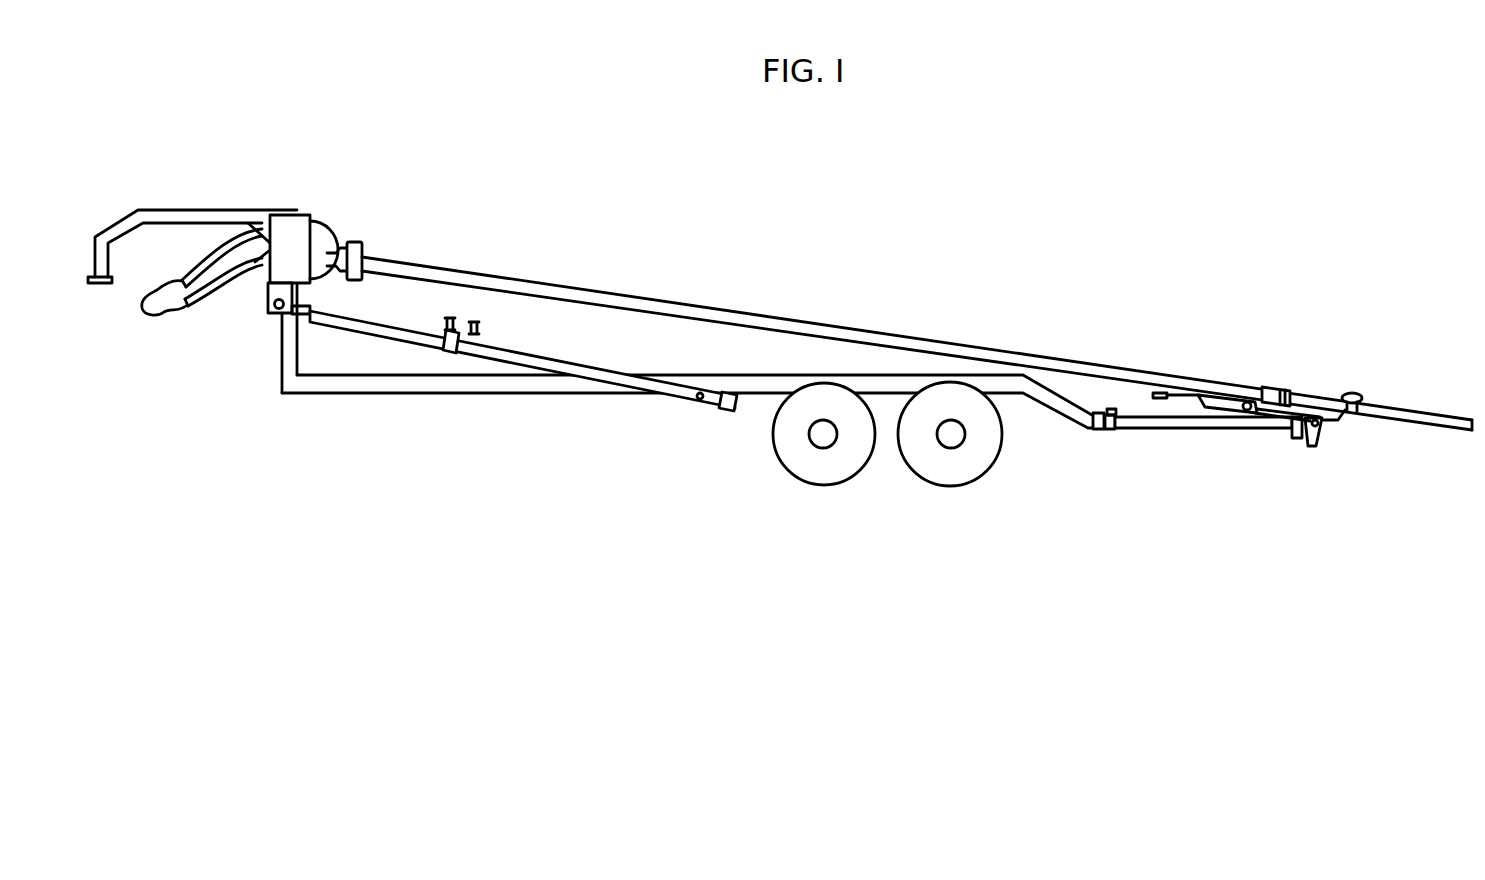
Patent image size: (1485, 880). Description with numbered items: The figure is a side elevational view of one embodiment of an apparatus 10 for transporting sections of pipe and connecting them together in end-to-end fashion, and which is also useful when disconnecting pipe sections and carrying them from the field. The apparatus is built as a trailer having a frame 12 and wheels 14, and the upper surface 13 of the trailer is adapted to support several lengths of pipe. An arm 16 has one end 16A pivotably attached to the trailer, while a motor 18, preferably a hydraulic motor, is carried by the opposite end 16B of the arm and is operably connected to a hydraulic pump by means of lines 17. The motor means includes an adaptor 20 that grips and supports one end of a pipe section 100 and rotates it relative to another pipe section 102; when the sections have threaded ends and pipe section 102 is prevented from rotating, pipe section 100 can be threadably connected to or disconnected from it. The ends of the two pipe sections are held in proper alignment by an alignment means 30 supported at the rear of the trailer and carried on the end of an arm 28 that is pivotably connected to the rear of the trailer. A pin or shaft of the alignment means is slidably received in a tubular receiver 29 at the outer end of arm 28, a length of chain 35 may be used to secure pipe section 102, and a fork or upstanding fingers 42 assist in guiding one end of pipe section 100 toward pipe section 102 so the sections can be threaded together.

The apparatus 10 is at (729, 184).
The frame 12 is at (330, 396).
The upper surface 13 is at (386, 375).
The wheels 14 is at (917, 477).
The arm 16 is at (589, 375).
The end of arm 16A is at (720, 413).
The opposite end of arm 16B is at (280, 314).
The lines 17 is at (151, 307).
The motor 18 is at (322, 220).
The adaptor 20 is at (360, 238).
The arm 28 is at (1187, 430).
The tubular receiver 29 is at (1293, 440).
The alignment means 30 is at (1328, 432).
The chain 35 is at (1283, 389).
The fork or upstanding fingers 42 is at (1183, 373).
The pipe section 100 is at (509, 281).
The pipe section 102 is at (1392, 409).